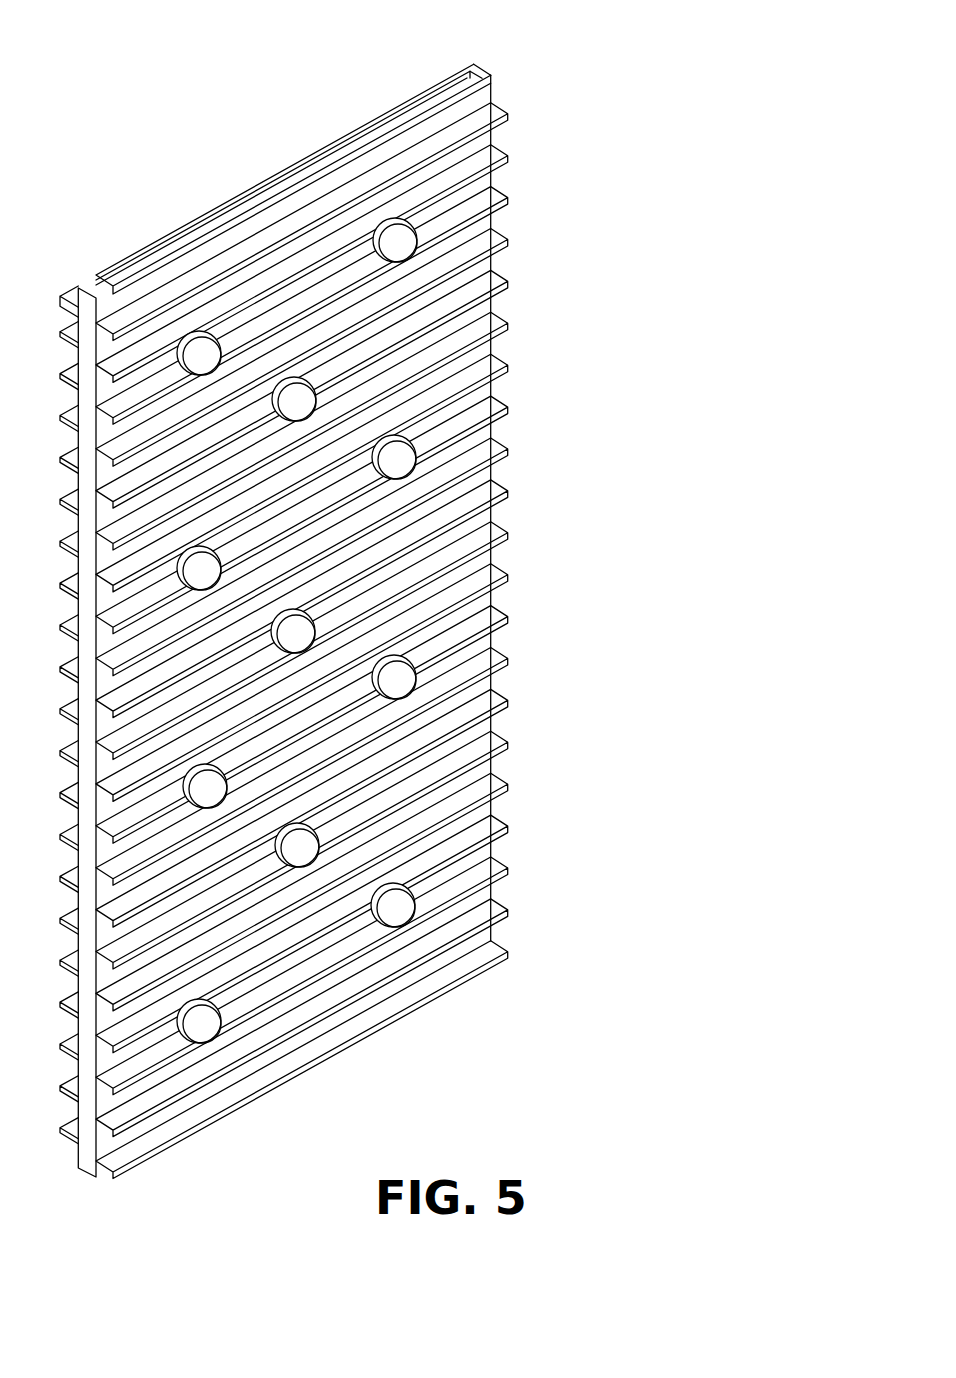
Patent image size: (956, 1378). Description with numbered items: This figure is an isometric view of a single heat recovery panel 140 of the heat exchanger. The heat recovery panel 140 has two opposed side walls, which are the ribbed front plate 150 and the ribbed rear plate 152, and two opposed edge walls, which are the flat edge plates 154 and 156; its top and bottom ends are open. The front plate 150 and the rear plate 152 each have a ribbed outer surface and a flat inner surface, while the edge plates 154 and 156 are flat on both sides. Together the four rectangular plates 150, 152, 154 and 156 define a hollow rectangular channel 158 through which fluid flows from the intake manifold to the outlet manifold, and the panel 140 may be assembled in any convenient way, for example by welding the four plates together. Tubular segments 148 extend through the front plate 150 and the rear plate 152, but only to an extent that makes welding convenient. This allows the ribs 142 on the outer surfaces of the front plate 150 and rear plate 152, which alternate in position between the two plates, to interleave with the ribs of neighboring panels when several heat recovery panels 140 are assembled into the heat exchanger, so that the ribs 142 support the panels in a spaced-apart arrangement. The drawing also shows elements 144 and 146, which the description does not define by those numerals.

The heat recovery panel 140 is at (562, 221).
The ribs 142 is at (486, 404).
The second fin 144 is at (486, 608).
The first opening 146 is at (405, 242).
The tubular segments 148 is at (408, 459).
The ribbed front plate 150 is at (476, 104).
The ribbed rear plate 152 is at (430, 90).
The flat edge plate 154 is at (492, 68).
The flat edge plate 156 is at (84, 284).
The hollow rectangular channel 158 is at (207, 220).